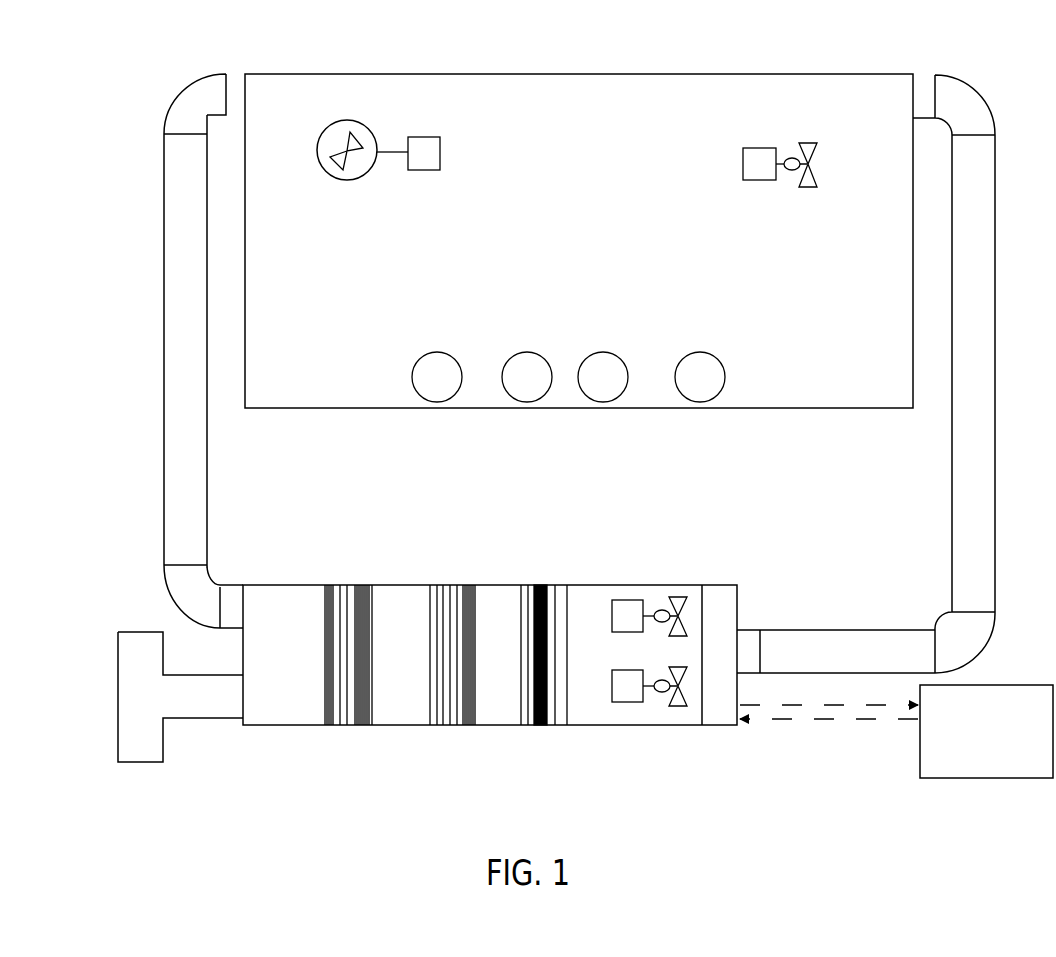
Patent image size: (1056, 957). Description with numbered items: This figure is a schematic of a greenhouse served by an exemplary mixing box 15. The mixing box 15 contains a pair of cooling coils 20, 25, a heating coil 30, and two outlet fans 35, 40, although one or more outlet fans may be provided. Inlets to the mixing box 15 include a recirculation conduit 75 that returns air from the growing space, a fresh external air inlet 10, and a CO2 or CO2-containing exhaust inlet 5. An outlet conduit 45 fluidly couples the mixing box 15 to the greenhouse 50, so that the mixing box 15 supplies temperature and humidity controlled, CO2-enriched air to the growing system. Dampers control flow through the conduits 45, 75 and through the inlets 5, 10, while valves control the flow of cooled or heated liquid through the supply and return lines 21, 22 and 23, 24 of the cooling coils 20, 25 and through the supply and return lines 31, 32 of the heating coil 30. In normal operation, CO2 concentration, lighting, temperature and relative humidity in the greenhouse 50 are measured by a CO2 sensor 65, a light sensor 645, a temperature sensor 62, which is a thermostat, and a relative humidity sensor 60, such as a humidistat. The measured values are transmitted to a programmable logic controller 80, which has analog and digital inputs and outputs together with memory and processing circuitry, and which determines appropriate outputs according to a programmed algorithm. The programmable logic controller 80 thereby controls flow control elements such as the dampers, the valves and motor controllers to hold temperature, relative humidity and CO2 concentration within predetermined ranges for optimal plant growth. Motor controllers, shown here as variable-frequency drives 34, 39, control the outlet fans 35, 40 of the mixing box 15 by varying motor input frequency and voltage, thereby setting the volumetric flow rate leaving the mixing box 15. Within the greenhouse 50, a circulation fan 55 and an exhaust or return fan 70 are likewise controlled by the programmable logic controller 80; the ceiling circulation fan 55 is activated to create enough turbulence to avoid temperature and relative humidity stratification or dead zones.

The CO2-containing exhaust inlet 5 is at (140, 766).
The fresh air inlet 10 is at (140, 630).
The mixing box 15 is at (265, 727).
The cooling coil 20 is at (320, 658).
The supply line 21 is at (333, 727).
The return line 22 is at (360, 727).
The supply line 23 is at (438, 727).
The return line 24 is at (464, 727).
The cooling coil 25 is at (427, 667).
The heating coil 30 is at (520, 667).
The supply line 31 is at (532, 727).
The return line 32 is at (558, 727).
The variable-frequency drive 34 is at (628, 600).
The outlet fan 35 is at (681, 617).
The variable-frequency drive 39 is at (626, 702).
The outlet fan 40 is at (679, 687).
The outlet conduit 45 is at (975, 376).
The greenhouse 50 is at (795, 408).
The circulation fan 55 is at (803, 143).
The relative humidity sensor 60 is at (725, 380).
The temperature sensor 62 is at (628, 380).
The light sensor 645 is at (502, 378).
The CO2 sensor 65 is at (412, 378).
The exhaust fan 70 is at (365, 130).
The recirculation conduit 75 is at (175, 358).
The programmable logic controller 80 is at (896, 731).